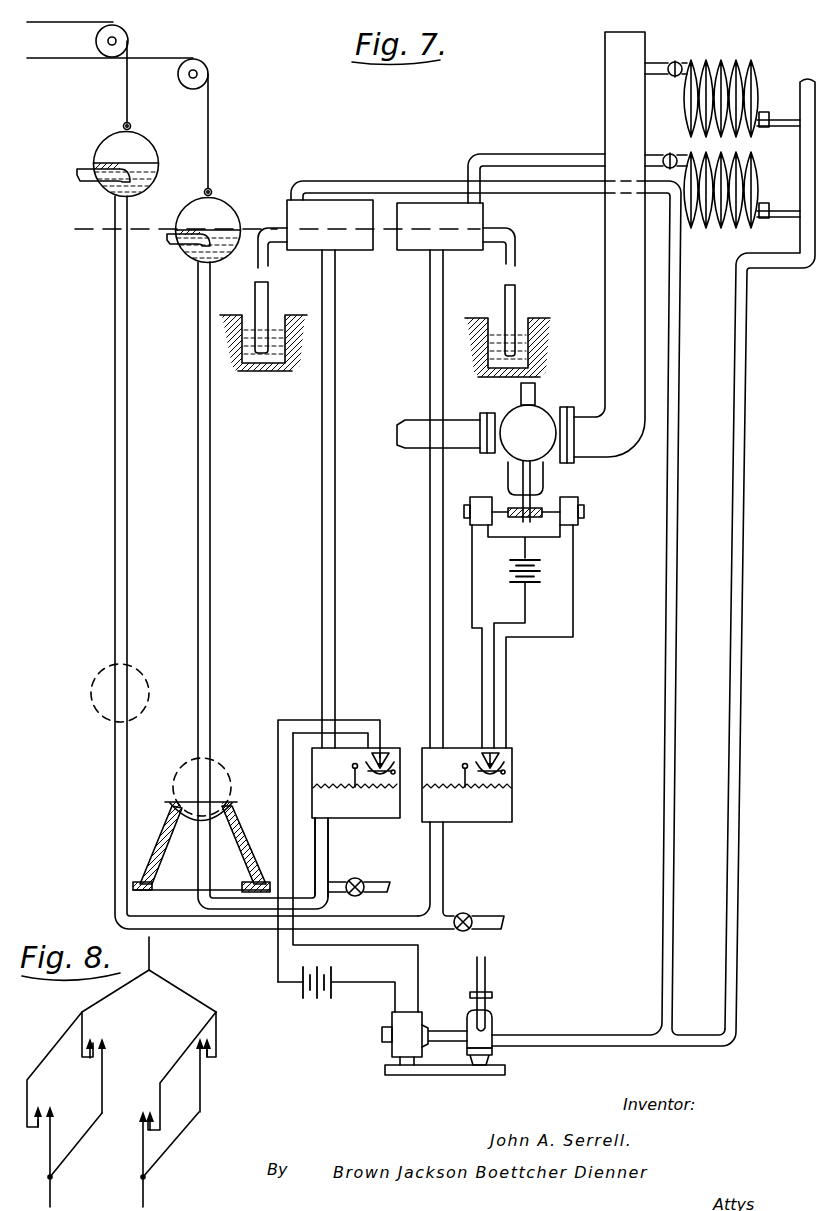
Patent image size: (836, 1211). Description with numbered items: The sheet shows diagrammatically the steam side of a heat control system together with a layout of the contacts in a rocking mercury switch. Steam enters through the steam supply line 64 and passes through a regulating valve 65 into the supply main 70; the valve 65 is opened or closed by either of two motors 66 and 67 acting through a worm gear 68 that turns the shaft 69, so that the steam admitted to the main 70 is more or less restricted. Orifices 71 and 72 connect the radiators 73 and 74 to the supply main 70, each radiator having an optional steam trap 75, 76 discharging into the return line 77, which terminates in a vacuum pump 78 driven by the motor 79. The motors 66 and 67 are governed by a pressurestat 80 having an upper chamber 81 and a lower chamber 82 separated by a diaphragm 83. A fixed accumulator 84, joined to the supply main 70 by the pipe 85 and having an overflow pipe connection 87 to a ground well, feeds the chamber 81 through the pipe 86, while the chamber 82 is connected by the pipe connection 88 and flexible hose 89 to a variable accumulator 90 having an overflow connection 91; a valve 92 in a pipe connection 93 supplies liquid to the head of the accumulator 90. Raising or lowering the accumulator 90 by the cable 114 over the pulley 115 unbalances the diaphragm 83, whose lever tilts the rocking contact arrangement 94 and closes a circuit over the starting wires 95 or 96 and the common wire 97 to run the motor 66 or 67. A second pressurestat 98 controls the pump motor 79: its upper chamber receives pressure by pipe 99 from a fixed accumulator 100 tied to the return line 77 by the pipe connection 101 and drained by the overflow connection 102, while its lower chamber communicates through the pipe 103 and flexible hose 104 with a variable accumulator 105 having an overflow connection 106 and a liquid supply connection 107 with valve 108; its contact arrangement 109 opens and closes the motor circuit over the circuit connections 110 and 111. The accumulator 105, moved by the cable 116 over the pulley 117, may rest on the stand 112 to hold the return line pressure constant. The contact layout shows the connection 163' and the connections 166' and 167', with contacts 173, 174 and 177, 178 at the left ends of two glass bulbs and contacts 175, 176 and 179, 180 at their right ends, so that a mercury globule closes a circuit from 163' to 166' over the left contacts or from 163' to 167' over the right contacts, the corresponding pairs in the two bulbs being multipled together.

In FIG. 7, the steam supply line 64 is at (409, 449).
In FIG. 7, the regulating valve 65 is at (539, 417).
In FIG. 7, the motor 66 is at (478, 502).
In FIG. 7, the motor 67 is at (580, 507).
In FIG. 7, the worm gear 68 is at (545, 506).
In FIG. 7, the shaft 69 is at (534, 487).
In FIG. 7, the supply main 70 is at (606, 299).
In FIG. 7, the orifice 71 is at (677, 61).
In FIG. 7, the orifice 72 is at (670, 153).
In FIG. 7, the radiator 73 is at (724, 57).
In FIG. 7, the radiator 74 is at (717, 227).
In FIG. 7, the steam trap 75 is at (767, 112).
In FIG. 7, the steam trap 76 is at (765, 203).
In FIG. 7, the return line 77 is at (742, 674).
In FIG. 7, the vacuum pump 78 is at (493, 1020).
In FIG. 7, the motor 79 is at (402, 1043).
In FIG. 7, the pressurestat 80 is at (514, 780).
In FIG. 7, the chamber 81 is at (452, 749).
In FIG. 7, the chamber 82 is at (473, 820).
In FIG. 7, the diaphragm 83 is at (473, 795).
In FIG. 7, the fixed accumulator 84 is at (486, 223).
In FIG. 7, the pipe 85 is at (544, 154).
In FIG. 7, the pipe 86 is at (436, 617).
In FIG. 7, the pipe connection 87 is at (516, 295).
In FIG. 7, the pipe connection 88 is at (446, 892).
In FIG. 7, the flexible hose 89 is at (133, 484).
In FIG. 7, the variable accumulator 90 is at (143, 684).
In FIG. 7, the overflow connection 91 is at (82, 180).
In FIG. 7, the valve 92 is at (468, 913).
In FIG. 7, the pipe connection 93 is at (493, 930).
In FIG. 7, the rocking contact arrangement 94 is at (516, 770).
In FIG. 7, the starting wire 95 is at (507, 668).
In FIG. 7, the starting wire 96 is at (482, 678).
In FIG. 7, the common wire 97 is at (497, 708).
In FIG. 7, the pressurestat 98 is at (383, 748).
In FIG. 7, the pipe 99 is at (337, 556).
In FIG. 7, the fixed accumulator 100 is at (357, 252).
In FIG. 7, the pipe connection 101 is at (387, 180).
In FIG. 7, the overflow connection 102 is at (270, 291).
In FIG. 7, the pipe 103 is at (326, 852).
In FIG. 7, the flexible hose 104 is at (213, 524).
In FIG. 7, the variable accumulator 105 is at (229, 762).
In FIG. 7, the overflow connection 106 is at (178, 252).
In FIG. 7, the connection 107 is at (385, 885).
In FIG. 7, the valve 108 is at (351, 876).
In FIG. 7, the contact arrangement 109 is at (393, 768).
In FIG. 7, the circuit connection 110 is at (278, 720).
In FIG. 7, the circuit connection 111 is at (296, 733).
In FIG. 7, the stand 112 is at (233, 837).
In FIG. 7, the cable 114 is at (70, 14).
In FIG. 7, the pulley 115 is at (123, 35).
In FIG. 7, the cable 116 is at (235, 133).
In FIG. 7, the pulley 117 is at (203, 65).
In FIG. 8, the connection 163' is at (184, 953).
In FIG. 8, the connection 166' is at (75, 1160).
In FIG. 8, the connection 167' is at (173, 1159).
In FIG. 8, the contact 173 is at (38, 1126).
In FIG. 8, the contact 174 is at (52, 1122).
In FIG. 8, the contact 175 is at (143, 1140).
In FIG. 8, the contact 176 is at (162, 1128).
In FIG. 8, the contact 177 is at (88, 1052).
In FIG. 8, the contact 178 is at (105, 1055).
In FIG. 8, the contact 179 is at (200, 1057).
In FIG. 8, the contact 180 is at (218, 1058).